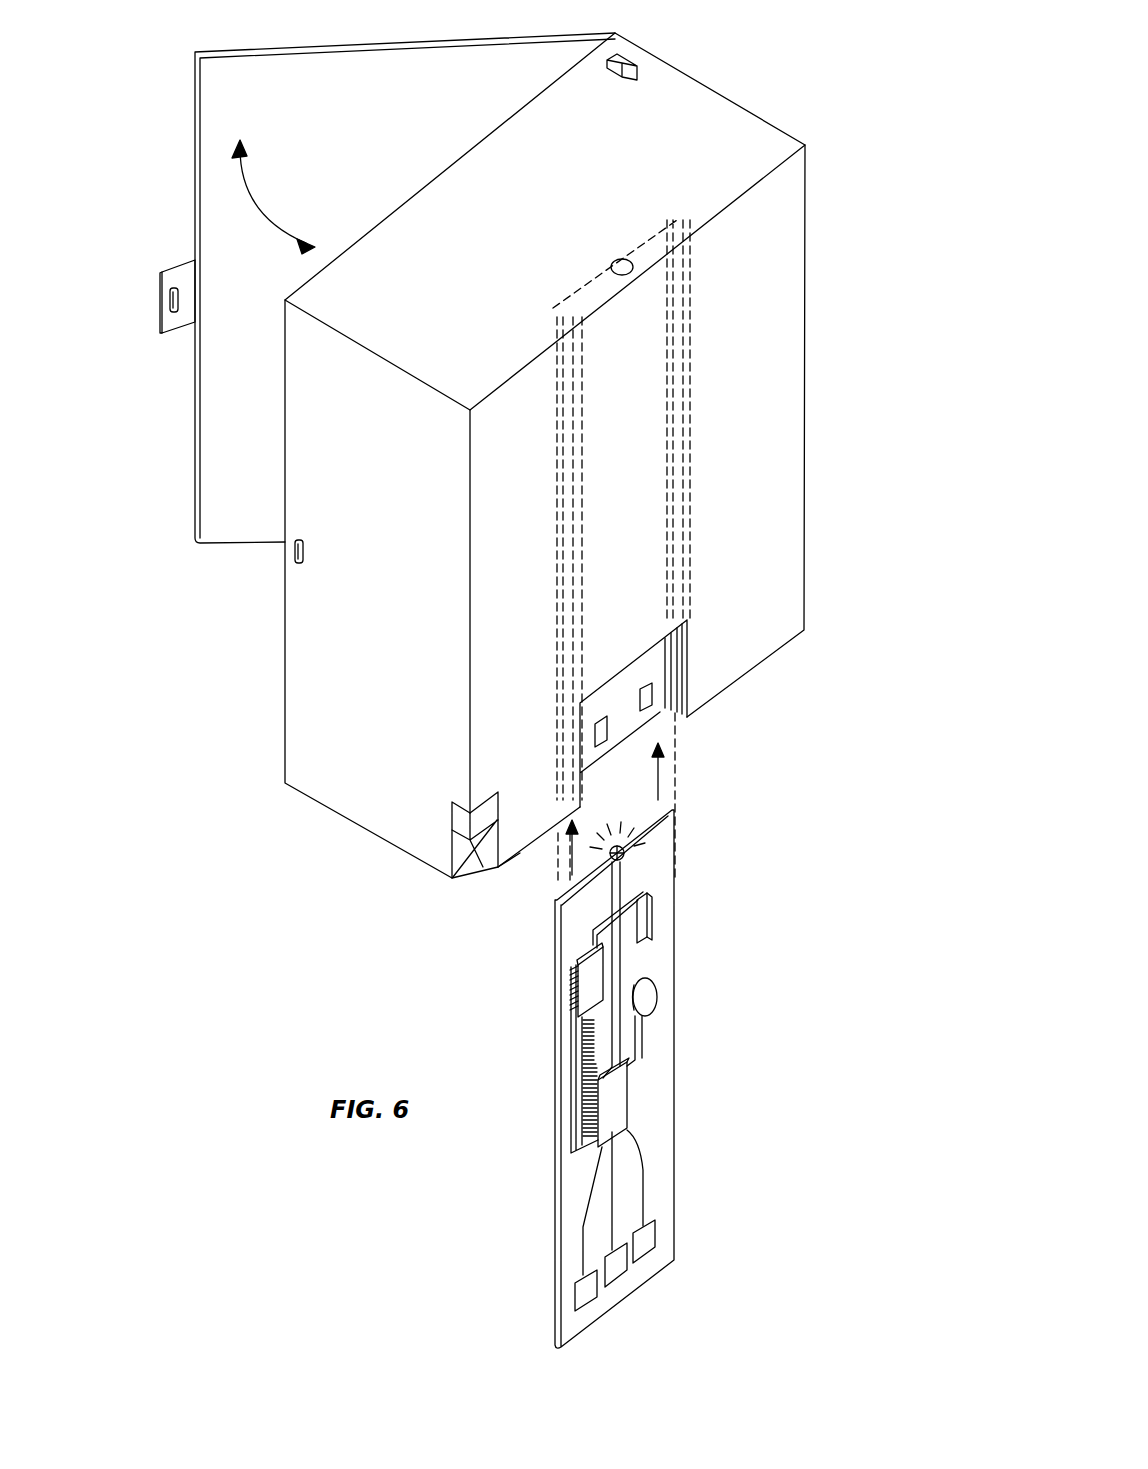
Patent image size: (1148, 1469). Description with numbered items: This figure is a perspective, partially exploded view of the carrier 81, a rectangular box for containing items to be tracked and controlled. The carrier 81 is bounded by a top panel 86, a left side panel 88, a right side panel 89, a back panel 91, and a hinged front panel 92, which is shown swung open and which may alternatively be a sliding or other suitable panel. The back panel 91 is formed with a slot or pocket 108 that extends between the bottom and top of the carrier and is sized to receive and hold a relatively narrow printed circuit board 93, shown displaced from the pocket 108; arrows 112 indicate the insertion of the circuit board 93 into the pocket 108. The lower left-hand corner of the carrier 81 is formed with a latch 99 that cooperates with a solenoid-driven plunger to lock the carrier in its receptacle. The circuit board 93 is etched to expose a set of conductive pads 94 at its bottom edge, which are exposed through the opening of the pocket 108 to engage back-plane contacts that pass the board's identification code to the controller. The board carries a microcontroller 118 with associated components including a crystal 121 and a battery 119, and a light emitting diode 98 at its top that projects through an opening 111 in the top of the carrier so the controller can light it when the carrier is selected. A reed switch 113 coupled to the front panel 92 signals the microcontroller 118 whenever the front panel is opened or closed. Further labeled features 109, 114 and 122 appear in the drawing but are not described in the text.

The carrier 81 is at (208, 737).
The top panel 86 is at (732, 163).
The left side panel 88 is at (308, 600).
The right side panel 89 is at (715, 125).
The back panel 91 is at (755, 440).
The hinged front panel 92 is at (362, 117).
The printed circuit board 93 is at (660, 1053).
The conductive pads 94 is at (645, 1253).
The light emitting diode 98 is at (627, 848).
The latch 99 is at (478, 890).
The pocket 108 is at (666, 726).
The guide rails 109 is at (677, 679).
The opening 111 is at (621, 262).
The arrows 112 is at (661, 778).
The reed switch 113 is at (623, 55).
The contacts 114 is at (648, 706).
The microcontroller 118 is at (613, 1113).
The battery 119 is at (656, 998).
The crystal 121 is at (652, 919).
The memory chip 122 is at (588, 1010).